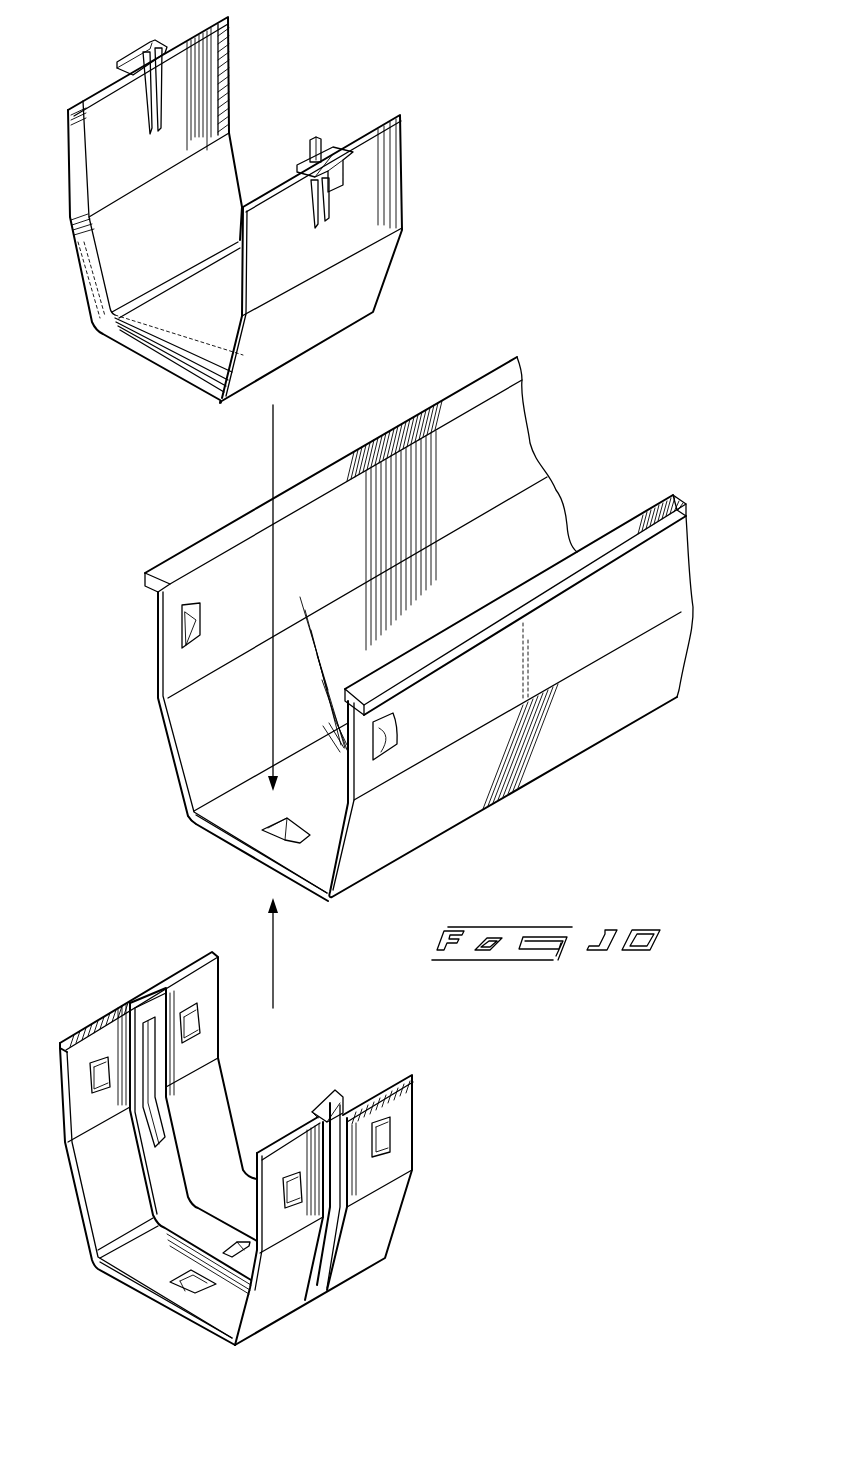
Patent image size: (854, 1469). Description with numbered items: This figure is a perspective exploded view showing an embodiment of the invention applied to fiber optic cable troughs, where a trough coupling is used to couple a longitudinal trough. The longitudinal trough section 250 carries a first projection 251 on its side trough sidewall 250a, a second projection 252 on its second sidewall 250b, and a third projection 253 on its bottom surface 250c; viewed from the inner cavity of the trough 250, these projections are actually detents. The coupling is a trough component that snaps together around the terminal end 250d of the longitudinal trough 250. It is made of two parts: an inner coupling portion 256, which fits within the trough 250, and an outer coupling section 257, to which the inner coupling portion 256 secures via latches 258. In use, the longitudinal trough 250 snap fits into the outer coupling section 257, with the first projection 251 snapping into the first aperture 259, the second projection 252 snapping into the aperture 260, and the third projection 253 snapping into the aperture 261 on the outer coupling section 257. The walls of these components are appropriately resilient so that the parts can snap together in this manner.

The longitudinal trough section 250 is at (381, 614).
The side trough sidewall 250a is at (656, 617).
The second sidewall 250b is at (352, 546).
The bottom surface 250c is at (340, 781).
The terminal end 250d is at (193, 823).
The first projection 251 is at (398, 737).
The second projection 252 is at (186, 632).
The third projection 253 is at (271, 821).
The inner coupling portion 256 is at (231, 205).
The outer coupling section 257 is at (282, 1148).
The latches 258 is at (148, 44).
The first aperture 259 is at (383, 1128).
The aperture 260 is at (194, 1030).
The aperture 261 is at (240, 1247).